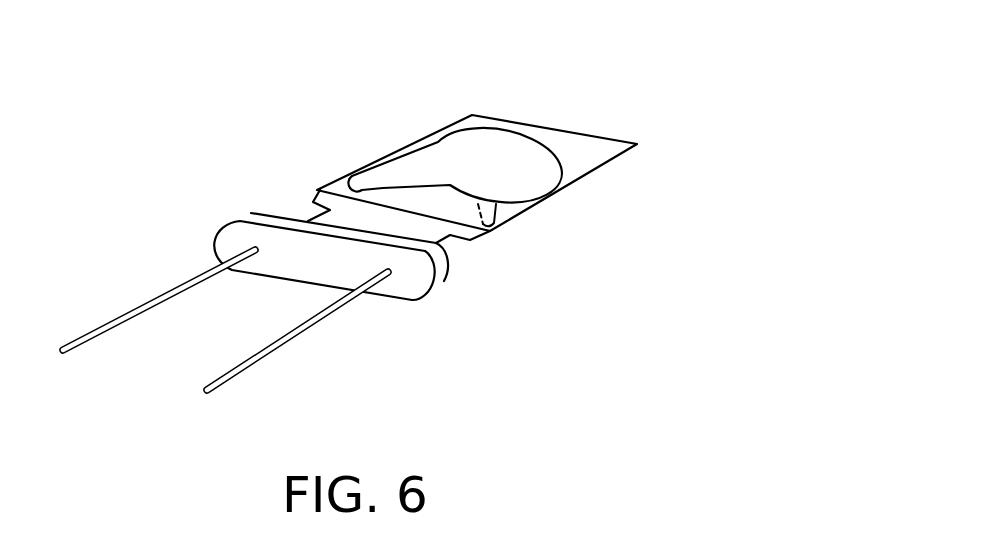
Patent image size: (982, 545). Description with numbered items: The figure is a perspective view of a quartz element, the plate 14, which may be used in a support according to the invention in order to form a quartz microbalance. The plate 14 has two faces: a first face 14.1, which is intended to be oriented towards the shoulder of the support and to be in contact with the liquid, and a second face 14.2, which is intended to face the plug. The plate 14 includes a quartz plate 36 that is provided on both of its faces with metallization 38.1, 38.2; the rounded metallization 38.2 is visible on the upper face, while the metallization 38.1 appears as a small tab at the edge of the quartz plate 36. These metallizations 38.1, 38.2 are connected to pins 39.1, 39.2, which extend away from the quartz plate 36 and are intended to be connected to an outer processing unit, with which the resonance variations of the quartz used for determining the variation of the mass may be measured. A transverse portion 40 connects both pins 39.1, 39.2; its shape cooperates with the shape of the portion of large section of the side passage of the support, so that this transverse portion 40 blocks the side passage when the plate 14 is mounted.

The plate 14 is at (497, 162).
The first face 14.1 is at (587, 157).
The second face 14.2 is at (522, 217).
The quartz plate 36 is at (573, 137).
The metallization 38.1 is at (497, 233).
The metallization 38.2 is at (462, 157).
The pin 39.1 is at (287, 340).
The pin 39.2 is at (93, 338).
The transverse portion 40 is at (410, 279).